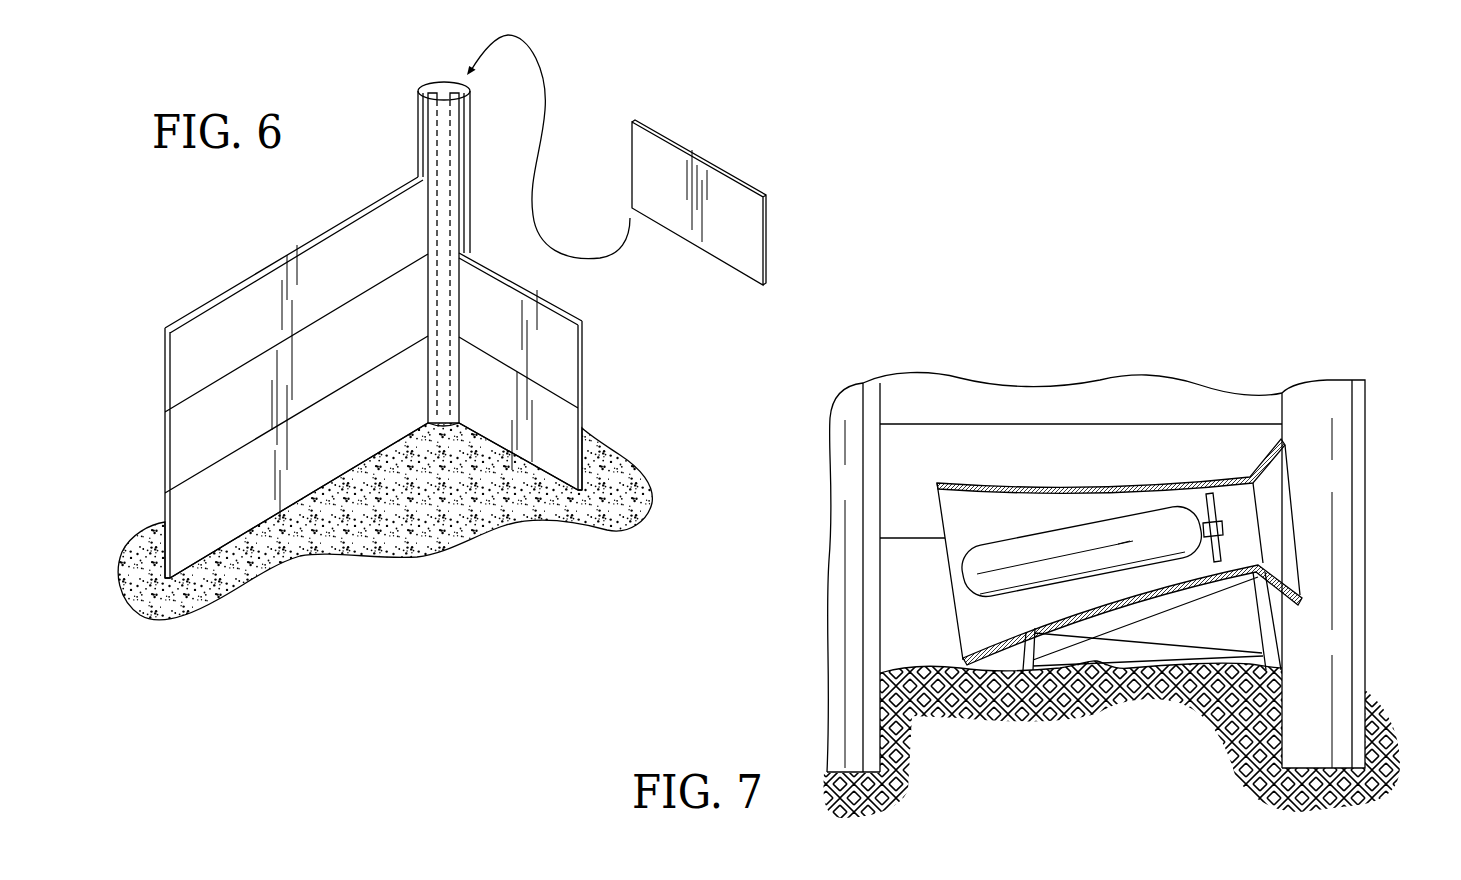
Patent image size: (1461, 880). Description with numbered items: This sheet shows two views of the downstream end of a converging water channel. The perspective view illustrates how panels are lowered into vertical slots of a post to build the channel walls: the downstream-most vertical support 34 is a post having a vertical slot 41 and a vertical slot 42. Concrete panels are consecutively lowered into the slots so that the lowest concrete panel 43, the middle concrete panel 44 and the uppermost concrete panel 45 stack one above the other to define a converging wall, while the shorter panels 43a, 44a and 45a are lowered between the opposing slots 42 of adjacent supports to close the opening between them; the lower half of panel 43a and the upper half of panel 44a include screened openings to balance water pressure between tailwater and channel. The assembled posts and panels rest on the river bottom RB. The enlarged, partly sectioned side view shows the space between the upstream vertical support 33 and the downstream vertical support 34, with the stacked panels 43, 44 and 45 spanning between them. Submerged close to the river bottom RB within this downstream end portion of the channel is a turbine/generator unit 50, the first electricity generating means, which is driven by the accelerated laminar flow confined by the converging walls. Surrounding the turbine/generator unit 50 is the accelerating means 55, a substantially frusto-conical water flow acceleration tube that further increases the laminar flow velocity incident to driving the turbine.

In FIG. 6, the vertical support 34 is at (425, 84).
In FIG. 7, the vertical support 34 is at (1333, 482).
In FIG. 6, the vertical slot 41 is at (427, 121).
In FIG. 6, the vertical slot 42 is at (463, 136).
In FIG. 6, the concrete panel 45 is at (371, 267).
In FIG. 7, the concrete panel 45 is at (957, 388).
In FIG. 6, the concrete panel 44 is at (371, 352).
In FIG. 7, the concrete panel 44 is at (920, 469).
In FIG. 6, the concrete panel 43 is at (371, 437).
In FIG. 7, the concrete panel 43 is at (925, 616).
In FIG. 6, the shorter panel 45a is at (733, 226).
In FIG. 6, the shorter panel 44a is at (565, 358).
In FIG. 6, the shorter panel 43a is at (562, 423).
In FIG. 6, the river bottom RB is at (400, 520).
In FIG. 7, the river bottom RB is at (1104, 668).
In FIG. 7, the vertical support 33 is at (830, 557).
In FIG. 7, the turbine/generator unit 50 is at (1101, 468).
In FIG. 7, the water flow acceleration tube 55 is at (1016, 487).